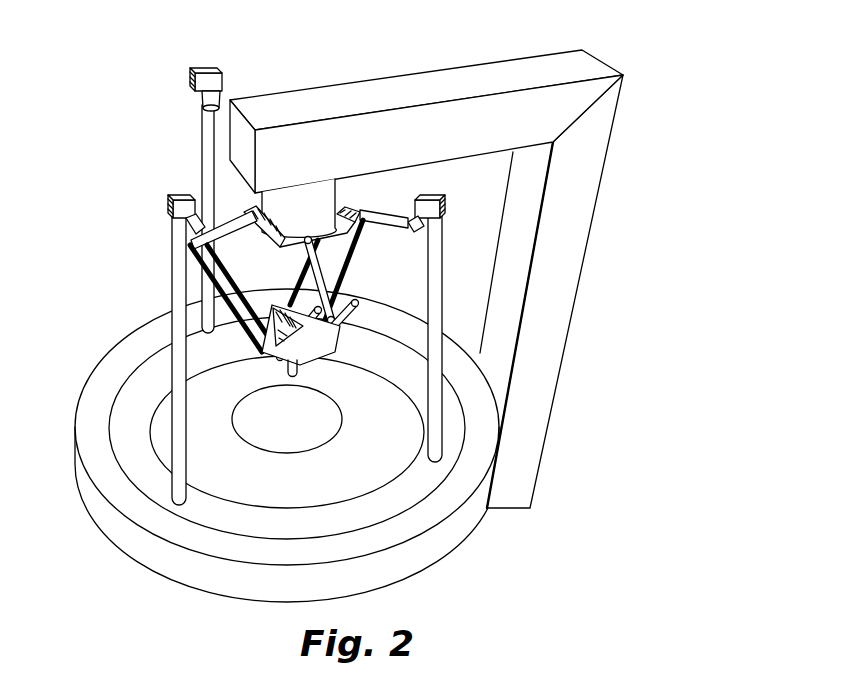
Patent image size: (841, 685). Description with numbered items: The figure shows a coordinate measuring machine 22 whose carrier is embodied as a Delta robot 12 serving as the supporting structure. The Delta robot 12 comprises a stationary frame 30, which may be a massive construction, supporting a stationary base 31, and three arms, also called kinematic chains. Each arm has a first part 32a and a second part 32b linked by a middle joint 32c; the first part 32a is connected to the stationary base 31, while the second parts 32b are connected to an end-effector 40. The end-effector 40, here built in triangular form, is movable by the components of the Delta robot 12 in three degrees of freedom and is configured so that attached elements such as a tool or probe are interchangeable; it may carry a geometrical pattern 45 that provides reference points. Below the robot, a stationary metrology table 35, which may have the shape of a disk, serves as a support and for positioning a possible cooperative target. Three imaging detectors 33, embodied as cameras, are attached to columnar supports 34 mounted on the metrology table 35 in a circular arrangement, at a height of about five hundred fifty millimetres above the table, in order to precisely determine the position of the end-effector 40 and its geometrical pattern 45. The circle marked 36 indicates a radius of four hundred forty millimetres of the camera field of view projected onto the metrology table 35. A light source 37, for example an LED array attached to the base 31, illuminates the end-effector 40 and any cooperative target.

The Delta robot 12 is at (440, 53).
The coordinate measuring machine 22 is at (137, 113).
The stationary frame 30 is at (565, 212).
The stationary base 31 is at (308, 198).
The first part of arm 32a is at (323, 275).
The second part of arm 32b is at (333, 337).
The middle joint 32c is at (343, 312).
The imaging detector 33 is at (221, 90).
The columnar support 34 is at (178, 440).
The metrology table 35 is at (477, 452).
The radius of the camera field of view 36 is at (157, 392).
The light source 37 is at (250, 237).
The end-effector 40 is at (262, 322).
The geometrical pattern 45 is at (258, 328).